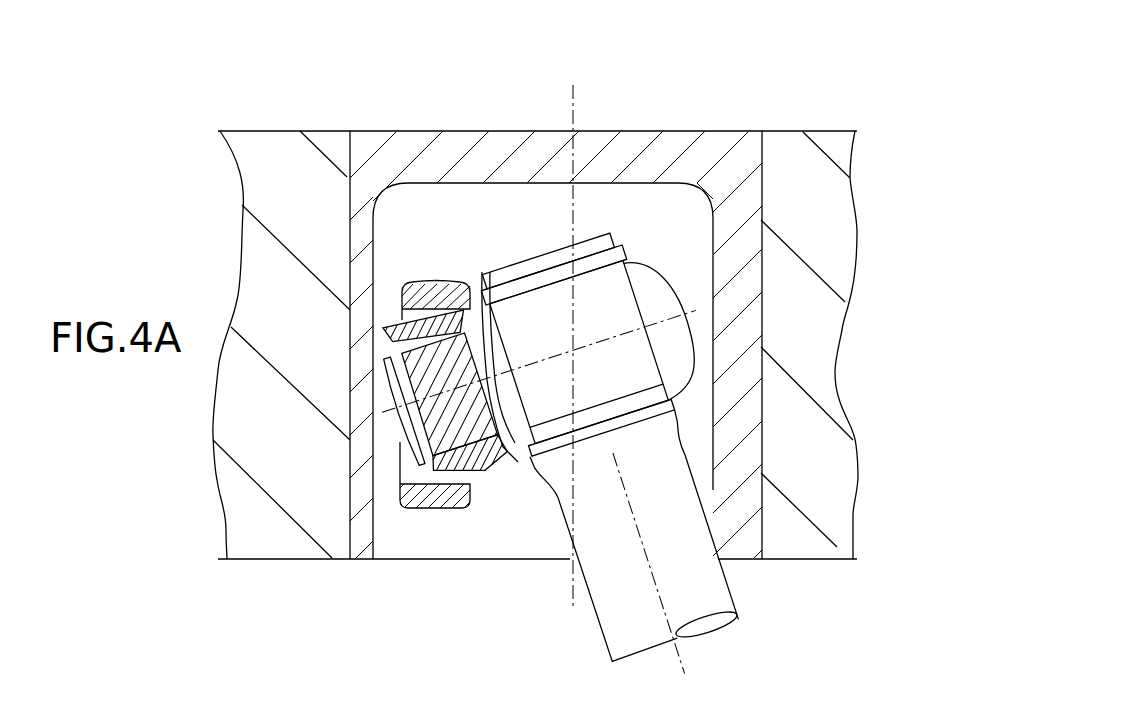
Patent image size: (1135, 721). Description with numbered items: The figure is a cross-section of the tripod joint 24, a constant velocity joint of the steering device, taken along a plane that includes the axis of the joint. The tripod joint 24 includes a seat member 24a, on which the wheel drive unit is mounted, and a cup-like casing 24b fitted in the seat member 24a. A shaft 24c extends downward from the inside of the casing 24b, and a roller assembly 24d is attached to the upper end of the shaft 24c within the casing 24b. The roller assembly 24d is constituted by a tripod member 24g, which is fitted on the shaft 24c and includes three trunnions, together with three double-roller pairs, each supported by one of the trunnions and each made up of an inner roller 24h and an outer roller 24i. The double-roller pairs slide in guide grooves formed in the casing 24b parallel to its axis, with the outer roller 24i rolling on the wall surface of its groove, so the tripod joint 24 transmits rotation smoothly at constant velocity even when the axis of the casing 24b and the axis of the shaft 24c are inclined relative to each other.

The tripod joint 24 is at (879, 50).
The seat member 24a is at (268, 142).
The casing 24b is at (722, 150).
The shaft 24c is at (603, 603).
The roller assembly 24d is at (455, 252).
The tripod member 24g is at (478, 300).
The inner roller 24h is at (488, 473).
The outer roller 24i is at (422, 497).